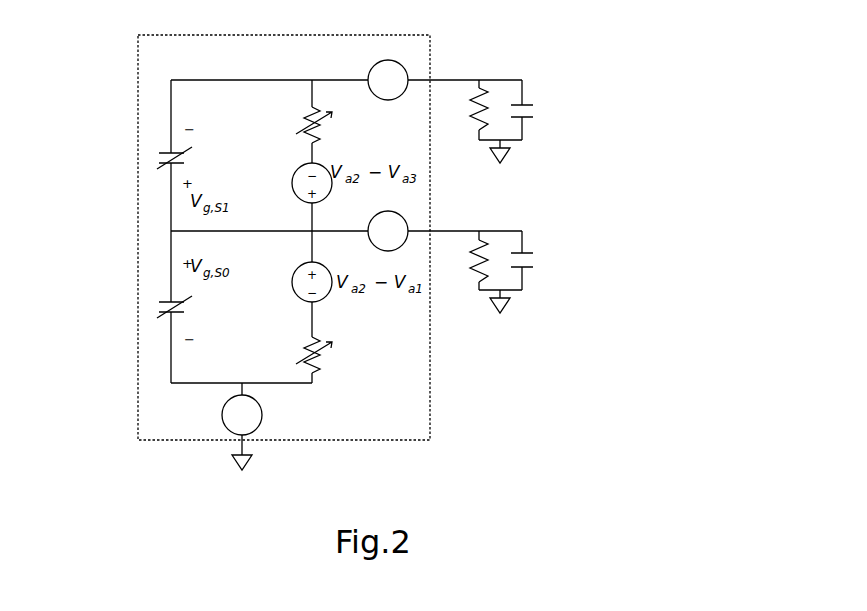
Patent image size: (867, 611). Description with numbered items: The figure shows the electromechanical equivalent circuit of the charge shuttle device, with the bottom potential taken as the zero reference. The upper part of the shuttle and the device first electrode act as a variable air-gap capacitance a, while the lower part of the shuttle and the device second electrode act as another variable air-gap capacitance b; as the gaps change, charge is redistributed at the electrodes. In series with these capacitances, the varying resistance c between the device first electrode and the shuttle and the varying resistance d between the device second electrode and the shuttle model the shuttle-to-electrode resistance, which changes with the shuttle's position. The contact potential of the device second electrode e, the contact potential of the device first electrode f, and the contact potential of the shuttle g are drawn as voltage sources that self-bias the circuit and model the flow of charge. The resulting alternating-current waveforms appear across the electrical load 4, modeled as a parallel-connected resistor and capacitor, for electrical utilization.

The capacitance between the shuttle and the device first electrode a is at (165, 163).
The capacitance between the shuttle and the device second electrode b is at (150, 310).
The varying resistance between the device first electrode and the shuttle c is at (340, 127).
The varying resistance between the device second electrode and the shuttle d is at (322, 368).
The contact potential of the device second electrode e is at (262, 425).
The contact potential of the device first electrode f is at (398, 65).
The contact potential of the shuttle g is at (395, 250).
The electrical load 4 is at (589, 121).